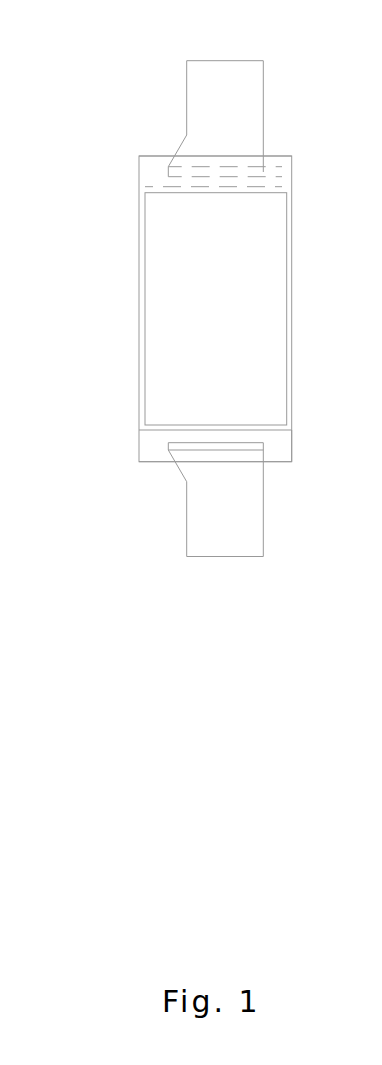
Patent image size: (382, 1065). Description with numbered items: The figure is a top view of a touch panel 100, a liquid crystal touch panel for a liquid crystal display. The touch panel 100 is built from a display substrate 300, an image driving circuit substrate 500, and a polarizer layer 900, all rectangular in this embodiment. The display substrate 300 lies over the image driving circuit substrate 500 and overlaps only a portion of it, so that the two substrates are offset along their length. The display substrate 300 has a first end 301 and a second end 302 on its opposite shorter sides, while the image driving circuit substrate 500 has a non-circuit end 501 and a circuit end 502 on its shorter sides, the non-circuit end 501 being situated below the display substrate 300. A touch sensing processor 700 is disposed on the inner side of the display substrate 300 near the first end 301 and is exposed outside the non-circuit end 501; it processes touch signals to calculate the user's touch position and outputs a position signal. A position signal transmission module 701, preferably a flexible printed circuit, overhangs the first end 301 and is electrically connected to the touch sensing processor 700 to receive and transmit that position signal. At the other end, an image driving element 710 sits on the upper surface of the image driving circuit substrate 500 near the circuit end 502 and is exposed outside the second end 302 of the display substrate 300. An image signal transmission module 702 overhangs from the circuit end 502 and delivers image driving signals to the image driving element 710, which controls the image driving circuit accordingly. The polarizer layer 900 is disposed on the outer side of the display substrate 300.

The touch panel 100 is at (53, 52).
The display substrate 300 is at (152, 173).
The first end 301 is at (152, 155).
The second end 302 is at (177, 430).
The polarizer layer 900 is at (158, 292).
The image driving circuit substrate 500 is at (282, 437).
The non-circuit end 501 is at (232, 187).
The circuit end 502 is at (157, 463).
The touch sensing processor 700 is at (260, 172).
The position signal transmission module 701 is at (220, 75).
The image signal transmission module 702 is at (220, 542).
The image driving element 710 is at (258, 444).